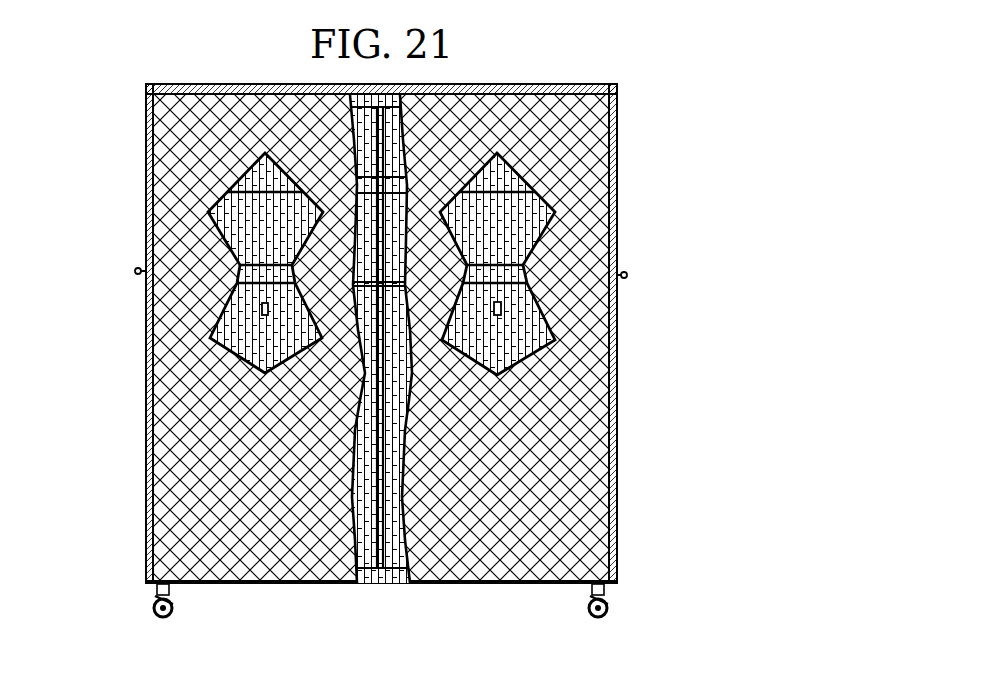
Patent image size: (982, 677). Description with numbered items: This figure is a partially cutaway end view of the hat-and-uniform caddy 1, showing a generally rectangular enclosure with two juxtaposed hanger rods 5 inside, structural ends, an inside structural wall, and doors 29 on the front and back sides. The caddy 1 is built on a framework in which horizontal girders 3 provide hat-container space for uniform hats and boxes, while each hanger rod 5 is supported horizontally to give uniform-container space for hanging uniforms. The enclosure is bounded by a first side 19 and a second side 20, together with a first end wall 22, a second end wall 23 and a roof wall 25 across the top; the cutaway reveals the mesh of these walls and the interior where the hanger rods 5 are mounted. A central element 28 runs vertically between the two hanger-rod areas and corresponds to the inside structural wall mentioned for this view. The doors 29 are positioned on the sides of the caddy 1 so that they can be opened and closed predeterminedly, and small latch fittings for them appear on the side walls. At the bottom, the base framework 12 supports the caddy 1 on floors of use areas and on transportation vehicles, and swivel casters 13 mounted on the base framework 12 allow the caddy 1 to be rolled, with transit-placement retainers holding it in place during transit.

The hat-and-uniform caddy 1 is at (658, 54).
The horizontal girders 3 is at (253, 187).
The hanger rod 5 is at (262, 304).
The base framework 12 is at (105, 603).
The swivel casters 13 is at (610, 603).
The first side 19 is at (157, 408).
The second side 20 is at (617, 416).
The first end wall 22 is at (255, 332).
The second end wall 23 is at (210, 383).
The roof wall 25 is at (185, 84).
The central column 28 is at (380, 463).
The doors 29 is at (152, 234).